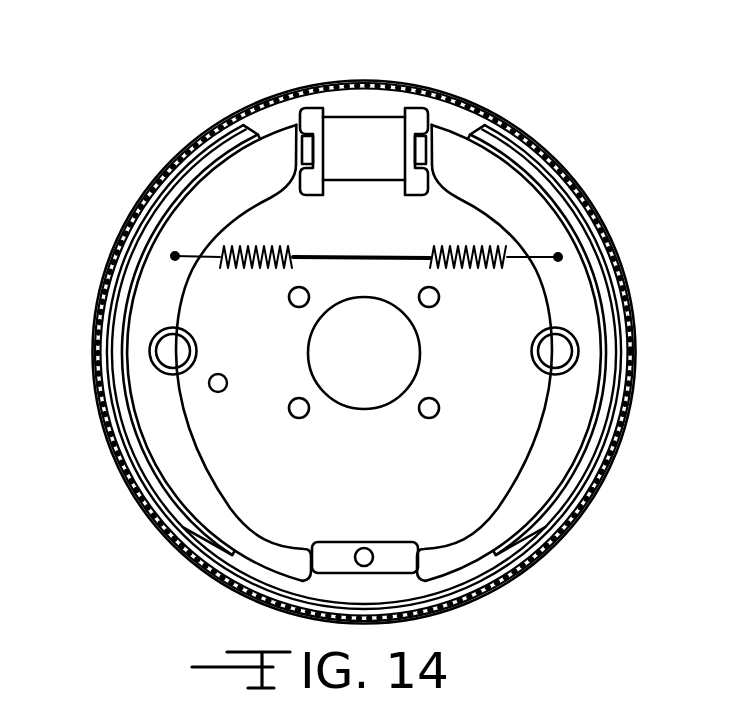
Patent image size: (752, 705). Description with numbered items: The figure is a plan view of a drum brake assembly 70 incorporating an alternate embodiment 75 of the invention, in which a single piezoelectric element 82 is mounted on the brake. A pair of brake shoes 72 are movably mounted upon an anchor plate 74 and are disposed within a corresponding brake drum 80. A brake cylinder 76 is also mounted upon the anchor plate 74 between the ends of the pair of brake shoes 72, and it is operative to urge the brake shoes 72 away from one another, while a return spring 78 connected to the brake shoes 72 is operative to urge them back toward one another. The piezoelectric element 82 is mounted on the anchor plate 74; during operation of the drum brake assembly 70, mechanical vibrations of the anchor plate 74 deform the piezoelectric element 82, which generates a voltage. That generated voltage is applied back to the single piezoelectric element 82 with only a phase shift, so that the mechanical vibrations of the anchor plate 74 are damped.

The drum brake assembly 70 is at (601, 128).
The brake shoes 72 is at (223, 520).
The anchor plate 74 is at (381, 470).
The alternate embodiment 75 is at (122, 144).
The brake cylinder 76 is at (383, 130).
The return spring 78 is at (266, 258).
The brake drum 80 is at (620, 256).
The piezoelectric element 82 is at (219, 374).